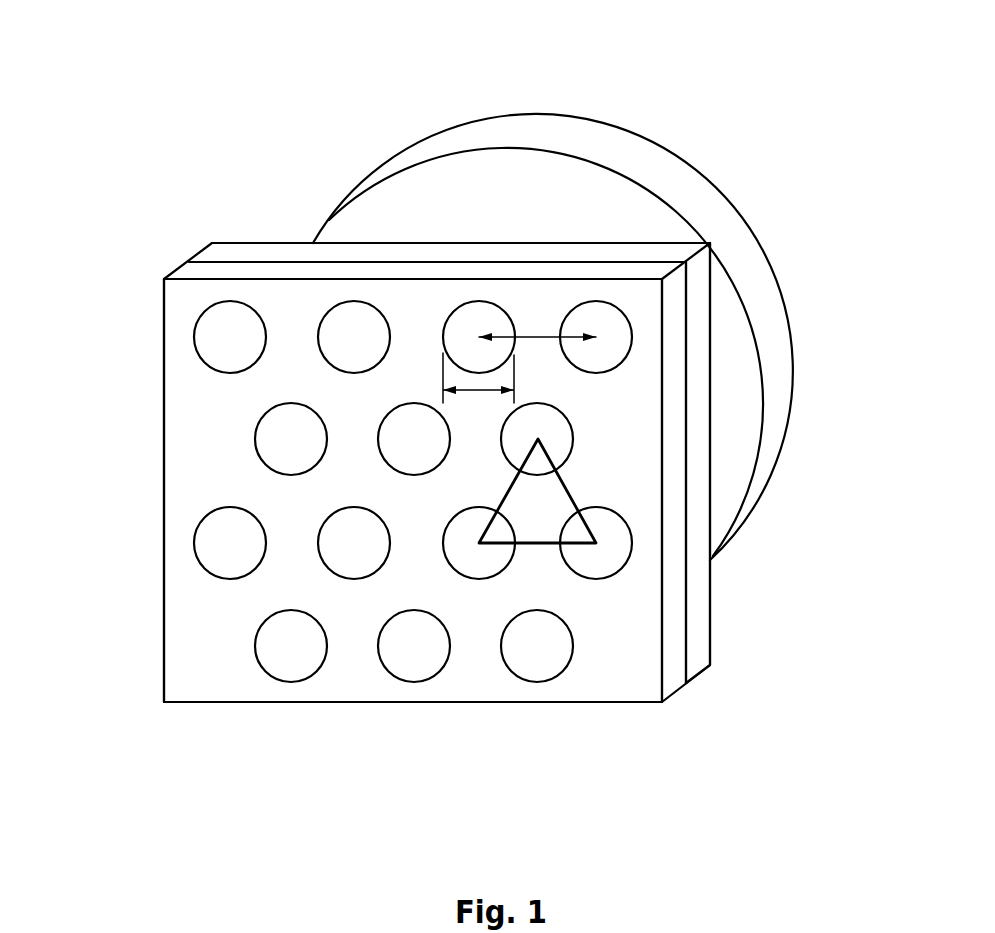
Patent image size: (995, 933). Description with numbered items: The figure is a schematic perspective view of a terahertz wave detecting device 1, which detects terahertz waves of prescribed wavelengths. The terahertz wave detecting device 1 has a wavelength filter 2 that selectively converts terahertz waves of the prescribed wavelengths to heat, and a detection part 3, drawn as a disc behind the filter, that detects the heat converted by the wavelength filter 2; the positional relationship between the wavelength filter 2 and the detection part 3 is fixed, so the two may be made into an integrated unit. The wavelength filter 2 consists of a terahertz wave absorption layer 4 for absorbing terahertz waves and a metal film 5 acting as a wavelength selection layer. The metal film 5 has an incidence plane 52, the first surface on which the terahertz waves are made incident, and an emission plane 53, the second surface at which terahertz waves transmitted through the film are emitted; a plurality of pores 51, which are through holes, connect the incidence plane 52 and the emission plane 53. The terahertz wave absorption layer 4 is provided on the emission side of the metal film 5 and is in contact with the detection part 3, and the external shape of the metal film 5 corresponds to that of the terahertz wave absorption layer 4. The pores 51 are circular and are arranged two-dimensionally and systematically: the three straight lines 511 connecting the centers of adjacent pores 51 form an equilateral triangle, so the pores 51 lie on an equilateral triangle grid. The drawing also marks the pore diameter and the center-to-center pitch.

The terahertz wave detecting device 1 is at (686, 79).
The wavelength filter 2 is at (162, 420).
The detection part 3 is at (767, 468).
The terahertz wave absorption layer 4 is at (703, 625).
The metal film 5 is at (193, 608).
The pores 51 is at (262, 673).
The straight lines 511 is at (512, 493).
The incidence plane 52 is at (633, 682).
The emission plane 53 is at (687, 653).